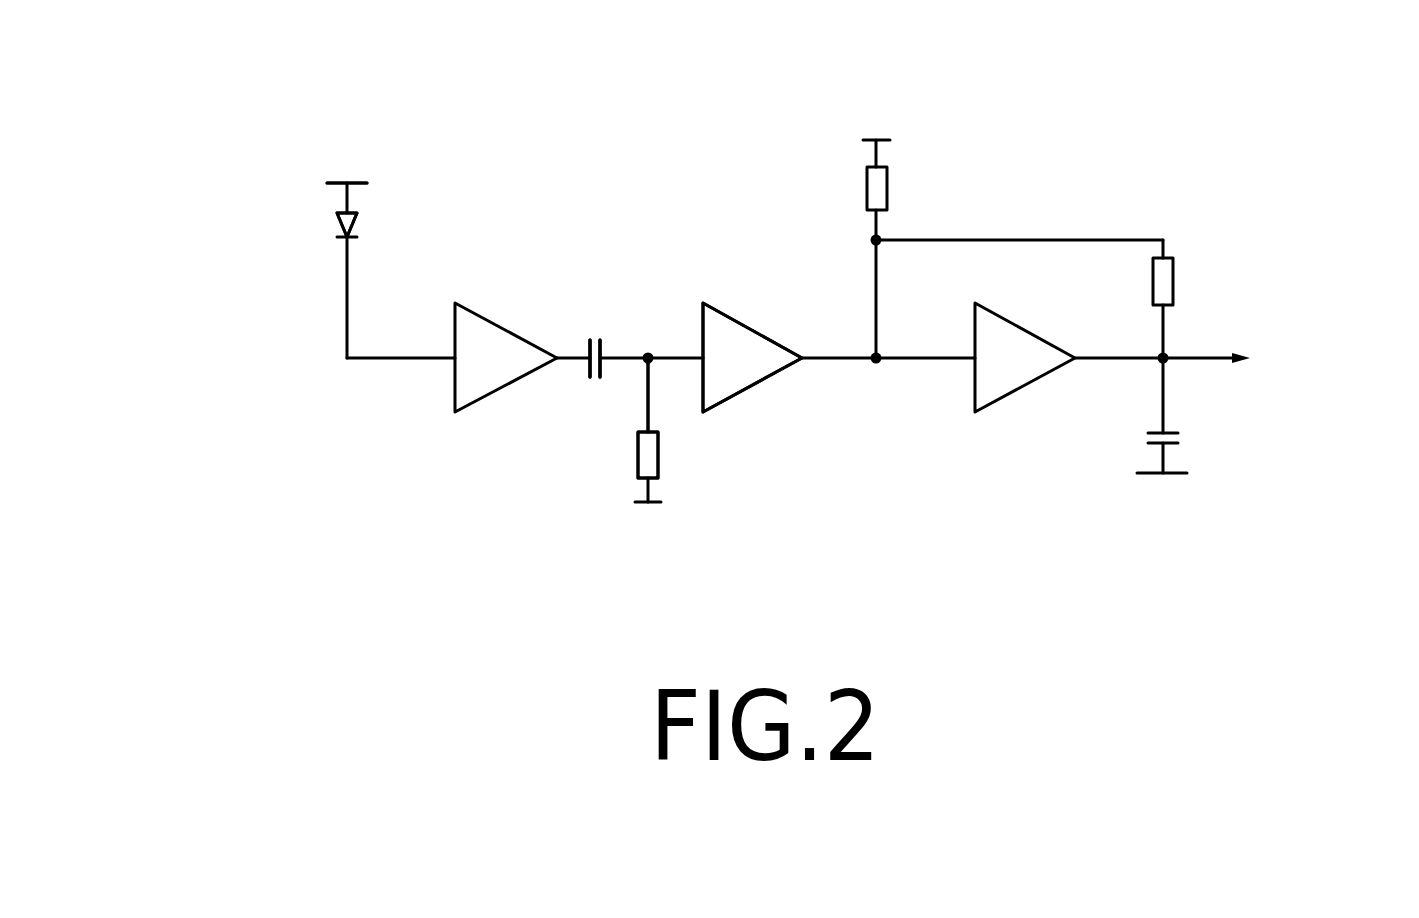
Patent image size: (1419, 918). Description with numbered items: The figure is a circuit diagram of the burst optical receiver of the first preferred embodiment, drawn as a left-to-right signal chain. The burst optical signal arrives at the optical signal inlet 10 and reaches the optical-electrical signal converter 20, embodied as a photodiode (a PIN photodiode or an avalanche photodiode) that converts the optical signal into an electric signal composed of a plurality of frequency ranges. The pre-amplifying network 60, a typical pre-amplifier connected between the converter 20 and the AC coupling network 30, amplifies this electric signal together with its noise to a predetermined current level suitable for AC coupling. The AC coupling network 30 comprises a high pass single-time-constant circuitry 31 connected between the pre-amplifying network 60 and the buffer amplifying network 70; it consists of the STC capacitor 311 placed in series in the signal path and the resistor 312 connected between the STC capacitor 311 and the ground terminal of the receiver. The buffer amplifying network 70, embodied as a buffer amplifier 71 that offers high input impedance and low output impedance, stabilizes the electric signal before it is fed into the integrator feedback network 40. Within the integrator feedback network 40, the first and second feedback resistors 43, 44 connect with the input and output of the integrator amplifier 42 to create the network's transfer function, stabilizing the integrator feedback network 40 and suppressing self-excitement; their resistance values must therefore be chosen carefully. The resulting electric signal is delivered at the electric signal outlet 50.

The optical signal inlet 10 is at (255, 200).
The optical-electrical signal converter 20 is at (398, 190).
The pre-amplifying network 60 is at (370, 432).
The AC coupling network 30 is at (541, 467).
The high pass single-time-constant circuitry 31 is at (608, 277).
The STC capacitor 311 is at (588, 345).
The resistor 312 is at (642, 460).
The buffer amplifying network 70 is at (771, 432).
The buffer amplifier 71 is at (730, 348).
The integrator feedback network 40 is at (1137, 158).
The first feedback resistor 43 is at (875, 187).
The second feedback resistor 44 is at (1163, 283).
The integrator amplifier 42 is at (992, 380).
The electric signal outlet 50 is at (1275, 340).